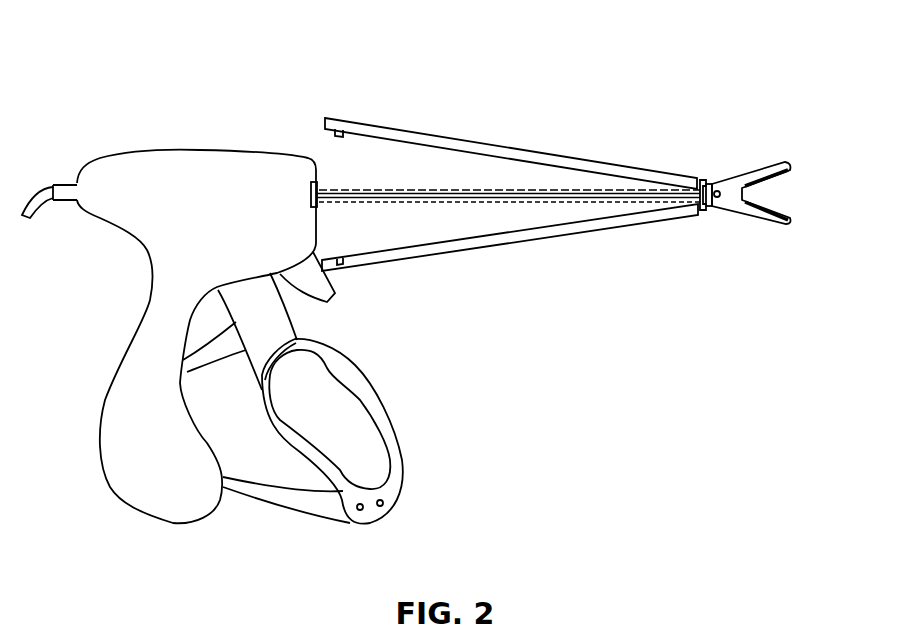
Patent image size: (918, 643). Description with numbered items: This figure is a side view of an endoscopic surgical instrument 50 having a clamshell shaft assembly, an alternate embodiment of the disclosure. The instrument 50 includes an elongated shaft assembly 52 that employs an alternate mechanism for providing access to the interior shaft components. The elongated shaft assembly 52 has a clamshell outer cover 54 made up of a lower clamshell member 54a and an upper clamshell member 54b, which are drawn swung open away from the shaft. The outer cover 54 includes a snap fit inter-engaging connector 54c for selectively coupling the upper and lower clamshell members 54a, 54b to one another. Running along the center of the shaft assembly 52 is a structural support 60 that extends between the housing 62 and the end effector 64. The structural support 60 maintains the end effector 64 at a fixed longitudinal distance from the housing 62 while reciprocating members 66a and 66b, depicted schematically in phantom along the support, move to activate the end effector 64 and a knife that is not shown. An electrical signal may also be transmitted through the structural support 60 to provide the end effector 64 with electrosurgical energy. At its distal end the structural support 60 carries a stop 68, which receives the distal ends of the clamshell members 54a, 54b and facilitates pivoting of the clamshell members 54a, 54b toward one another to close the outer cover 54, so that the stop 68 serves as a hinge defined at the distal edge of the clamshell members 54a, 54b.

The instrument 50 is at (166, 48).
The elongated shaft assembly 52 is at (732, 133).
The clamshell outer cover 54 is at (379, 110).
The lower clamshell member 54a is at (460, 238).
The upper clamshell member 54b is at (463, 145).
The snap fit inter-engaging connector 54c is at (306, 137).
The structural support 60 is at (603, 190).
The housing 62 is at (170, 160).
The end effector 64 is at (777, 207).
The reciprocating member 66a is at (545, 202).
The reciprocating member 66b is at (594, 188).
The stop 68 is at (703, 210).